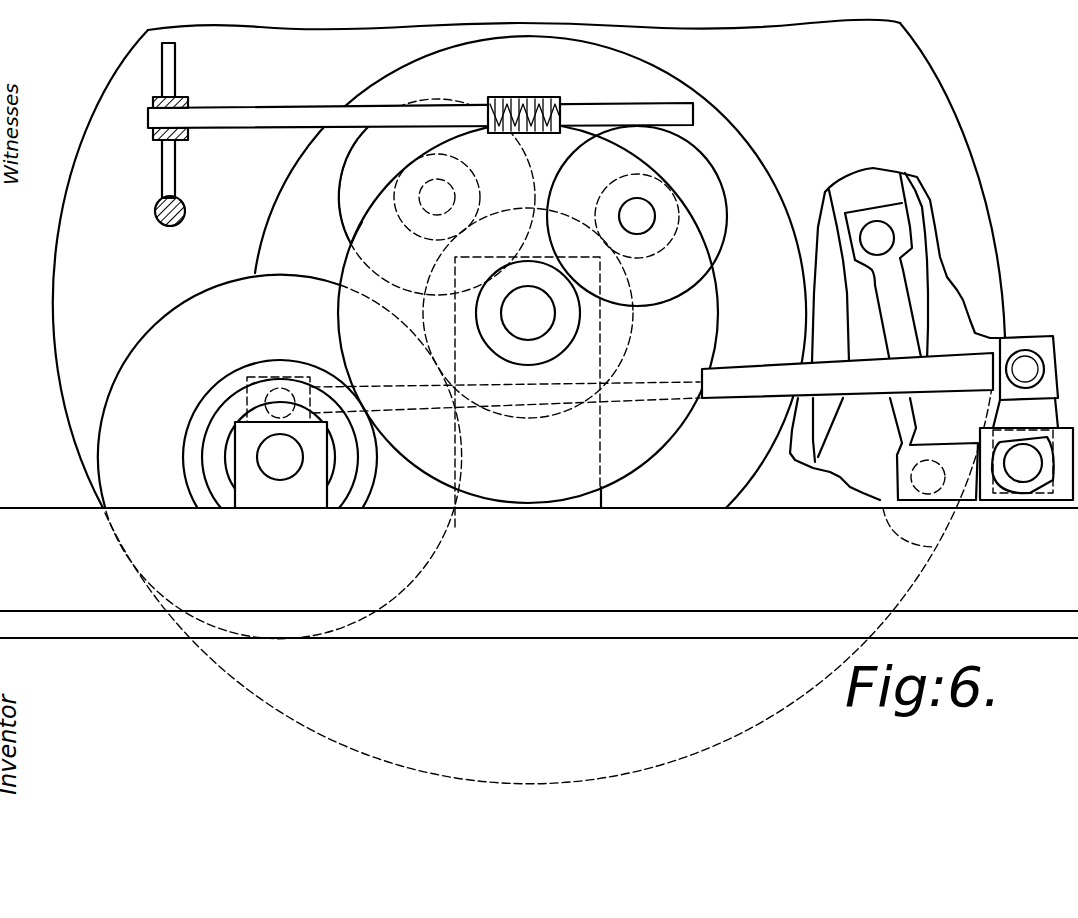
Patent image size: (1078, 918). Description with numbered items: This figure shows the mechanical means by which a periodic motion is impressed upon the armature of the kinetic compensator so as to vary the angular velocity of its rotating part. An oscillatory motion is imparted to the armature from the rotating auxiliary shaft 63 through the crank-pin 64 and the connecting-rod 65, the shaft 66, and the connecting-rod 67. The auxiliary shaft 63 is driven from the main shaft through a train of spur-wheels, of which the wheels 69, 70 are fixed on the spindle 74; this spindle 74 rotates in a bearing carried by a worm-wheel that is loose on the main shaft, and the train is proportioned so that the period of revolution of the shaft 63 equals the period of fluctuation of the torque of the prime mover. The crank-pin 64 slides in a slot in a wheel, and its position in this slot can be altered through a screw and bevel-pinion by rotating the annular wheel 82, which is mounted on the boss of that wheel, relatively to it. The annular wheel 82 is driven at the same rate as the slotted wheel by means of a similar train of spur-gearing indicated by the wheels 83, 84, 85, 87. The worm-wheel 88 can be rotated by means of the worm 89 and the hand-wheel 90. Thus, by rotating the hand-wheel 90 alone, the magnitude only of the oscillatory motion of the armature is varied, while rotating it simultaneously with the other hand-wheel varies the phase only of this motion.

The auxiliary shaft 63 is at (290, 468).
The crank-pin 64 is at (277, 373).
The connecting-rod 65 is at (735, 385).
The shaft 66 is at (1030, 478).
The connecting-rod 67 is at (890, 308).
The spur-wheel 69 is at (348, 197).
The spur-wheel 70 is at (352, 233).
The spindle 74 is at (430, 192).
The annular wheel 82 is at (147, 343).
The spur-wheel 83 is at (556, 346).
The spur-wheel 84 is at (670, 183).
The spur-wheel 85 is at (665, 253).
The spur-wheel 87 is at (630, 332).
The worm-wheel 88 is at (640, 457).
The worm 89 is at (535, 97).
The hand-wheel 90 is at (155, 210).